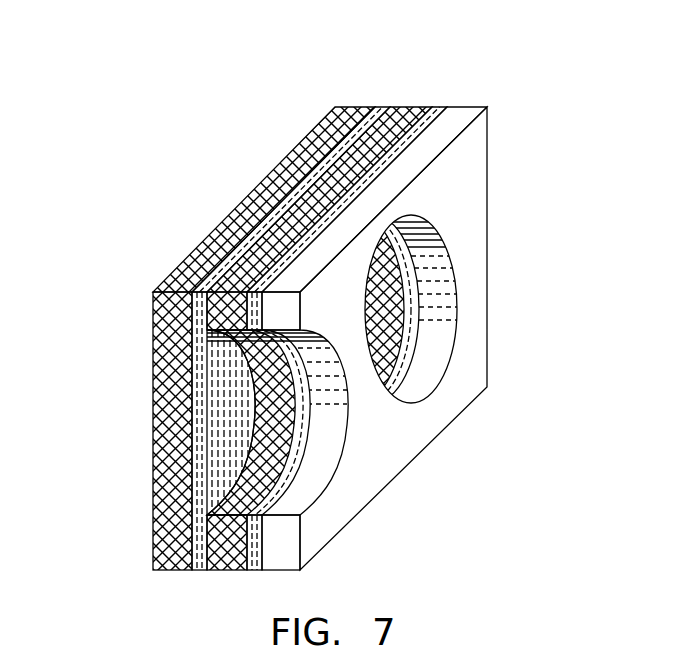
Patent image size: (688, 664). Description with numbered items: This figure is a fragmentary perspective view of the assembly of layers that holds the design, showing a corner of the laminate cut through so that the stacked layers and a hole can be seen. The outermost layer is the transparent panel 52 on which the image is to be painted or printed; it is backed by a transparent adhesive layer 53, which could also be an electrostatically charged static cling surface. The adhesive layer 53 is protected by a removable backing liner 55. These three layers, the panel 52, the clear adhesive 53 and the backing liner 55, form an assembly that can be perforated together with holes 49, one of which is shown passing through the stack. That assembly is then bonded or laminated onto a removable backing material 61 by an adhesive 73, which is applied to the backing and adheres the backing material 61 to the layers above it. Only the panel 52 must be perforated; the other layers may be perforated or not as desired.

The holes 49 is at (440, 332).
The panel 52 is at (485, 173).
The transparent adhesive layer 53 is at (436, 106).
The removable backing liner 55 is at (408, 106).
The removable backing material 61 is at (248, 197).
The adhesive 73 is at (383, 106).